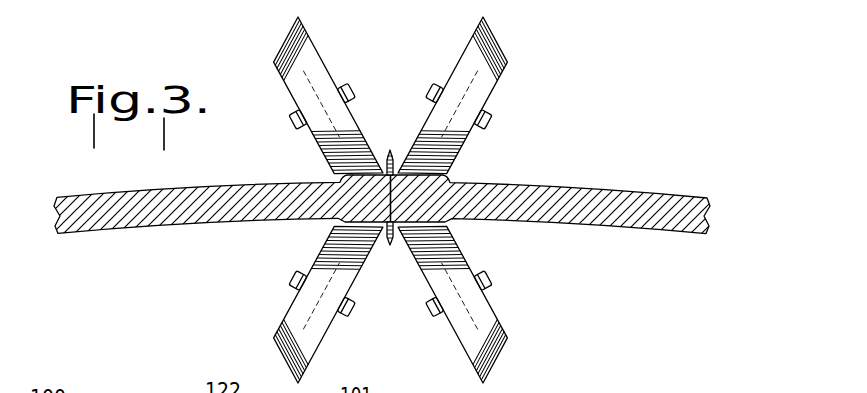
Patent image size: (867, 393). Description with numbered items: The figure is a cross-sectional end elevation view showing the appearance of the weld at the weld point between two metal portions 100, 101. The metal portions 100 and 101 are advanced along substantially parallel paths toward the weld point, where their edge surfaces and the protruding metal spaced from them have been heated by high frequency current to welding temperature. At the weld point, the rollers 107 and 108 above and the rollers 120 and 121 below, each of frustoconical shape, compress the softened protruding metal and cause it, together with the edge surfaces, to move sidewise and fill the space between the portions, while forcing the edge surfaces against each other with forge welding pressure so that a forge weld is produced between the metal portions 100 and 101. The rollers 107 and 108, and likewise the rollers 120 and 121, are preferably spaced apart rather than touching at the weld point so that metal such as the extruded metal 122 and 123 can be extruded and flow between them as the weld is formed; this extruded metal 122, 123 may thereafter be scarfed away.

The metal portion 100 is at (99, 220).
The metal portion 101 is at (633, 222).
The roller 107 is at (292, 75).
The roller 108 is at (500, 78).
The roller 120 is at (285, 322).
The roller 121 is at (497, 320).
The extruded metal 122 is at (392, 155).
The extruded metal 123 is at (392, 245).